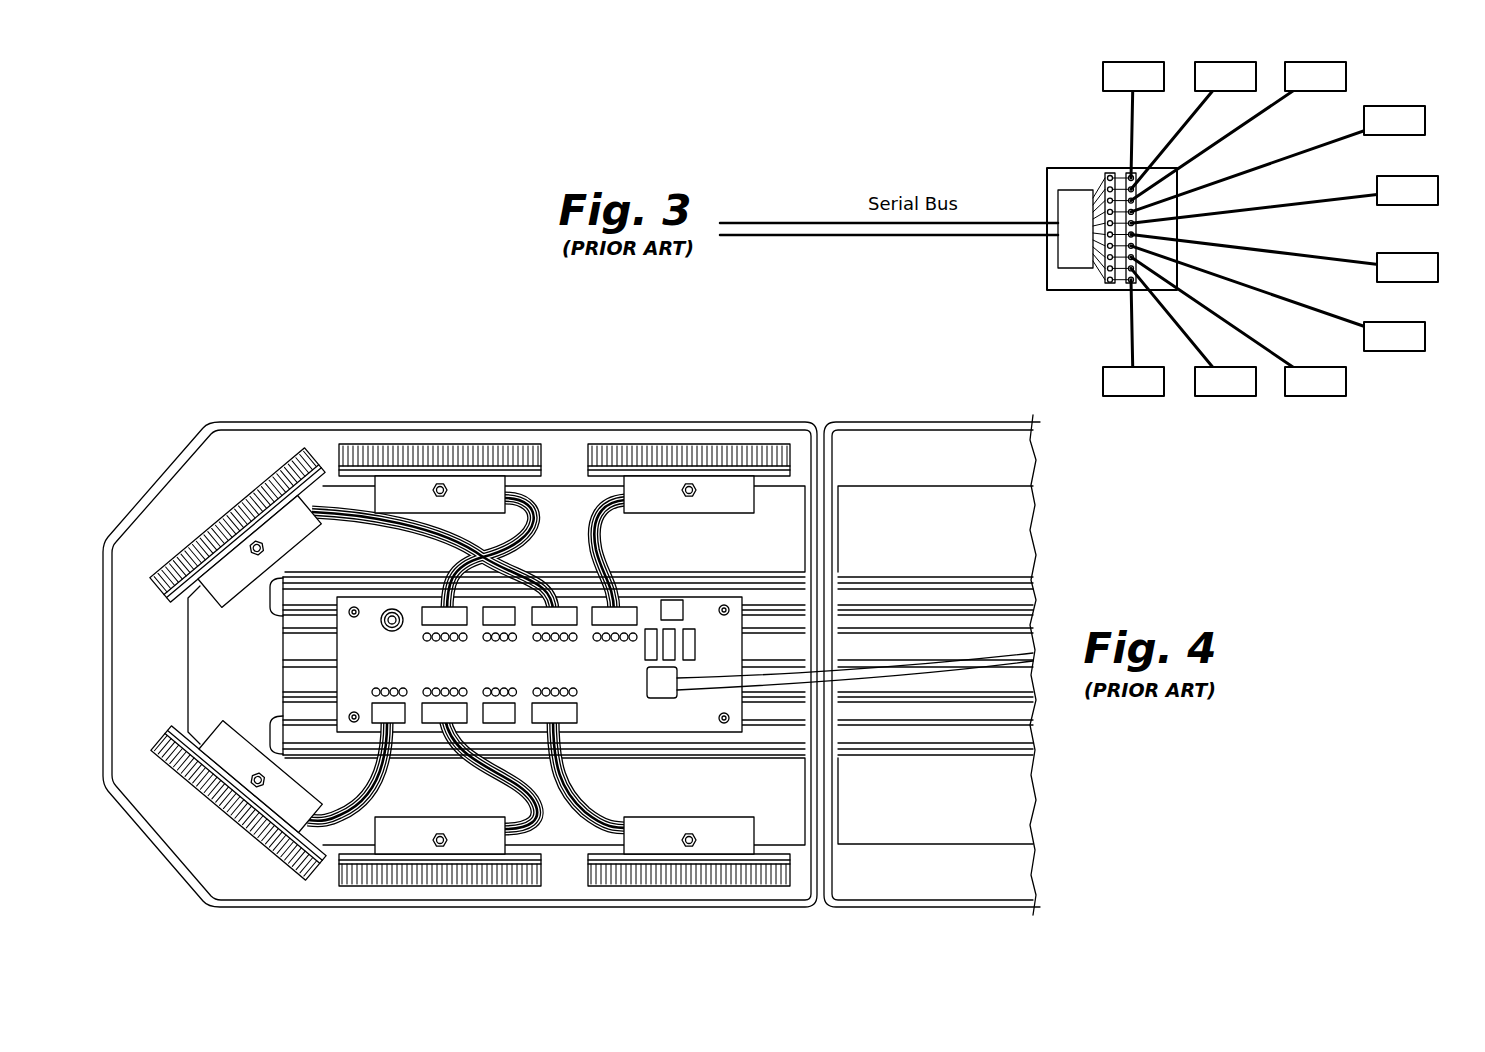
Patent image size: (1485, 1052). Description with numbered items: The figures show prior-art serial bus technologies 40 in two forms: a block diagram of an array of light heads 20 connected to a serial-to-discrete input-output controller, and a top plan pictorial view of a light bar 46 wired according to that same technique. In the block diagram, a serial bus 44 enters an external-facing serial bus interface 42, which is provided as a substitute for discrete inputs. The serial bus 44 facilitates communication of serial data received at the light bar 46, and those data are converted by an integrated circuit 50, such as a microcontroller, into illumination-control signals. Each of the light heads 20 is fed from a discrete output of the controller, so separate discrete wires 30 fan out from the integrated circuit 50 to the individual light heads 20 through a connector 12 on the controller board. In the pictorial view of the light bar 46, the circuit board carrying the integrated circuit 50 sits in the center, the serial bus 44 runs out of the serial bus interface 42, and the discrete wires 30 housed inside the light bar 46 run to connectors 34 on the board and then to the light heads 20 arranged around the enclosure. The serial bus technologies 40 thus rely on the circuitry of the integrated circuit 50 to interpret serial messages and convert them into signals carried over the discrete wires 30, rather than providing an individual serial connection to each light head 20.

In FIG. 3, the connector 12 is at (1110, 173).
In FIG. 3, the light head 20 is at (1128, 62).
In FIG. 4, the light head 20 is at (218, 523).
In FIG. 3, the discrete wires 30 is at (1136, 110).
In FIG. 4, the discrete wires 30 is at (531, 512).
In FIG. 4, the connector 34 is at (504, 665).
In FIG. 3, the serial bus technologies 40 is at (845, 155).
In FIG. 4, the serial bus technologies 40 is at (697, 703).
In FIG. 3, the serial bus interface 42 is at (1038, 252).
In FIG. 4, the serial bus interface 42 is at (647, 683).
In FIG. 3, the serial bus 44 is at (778, 222).
In FIG. 4, the serial bus 44 is at (932, 627).
In FIG. 4, the light bar 46 is at (163, 500).
In FIG. 3, the integrated circuit 50 is at (1072, 192).
In FIG. 4, the integrated circuit 50 is at (705, 622).